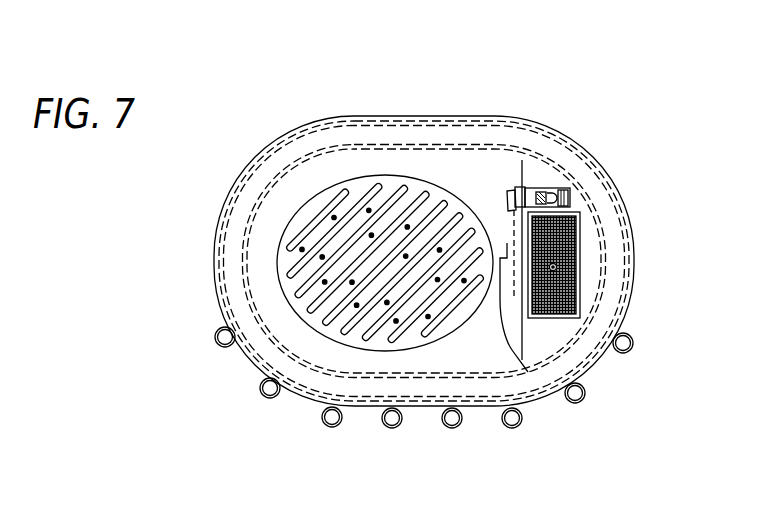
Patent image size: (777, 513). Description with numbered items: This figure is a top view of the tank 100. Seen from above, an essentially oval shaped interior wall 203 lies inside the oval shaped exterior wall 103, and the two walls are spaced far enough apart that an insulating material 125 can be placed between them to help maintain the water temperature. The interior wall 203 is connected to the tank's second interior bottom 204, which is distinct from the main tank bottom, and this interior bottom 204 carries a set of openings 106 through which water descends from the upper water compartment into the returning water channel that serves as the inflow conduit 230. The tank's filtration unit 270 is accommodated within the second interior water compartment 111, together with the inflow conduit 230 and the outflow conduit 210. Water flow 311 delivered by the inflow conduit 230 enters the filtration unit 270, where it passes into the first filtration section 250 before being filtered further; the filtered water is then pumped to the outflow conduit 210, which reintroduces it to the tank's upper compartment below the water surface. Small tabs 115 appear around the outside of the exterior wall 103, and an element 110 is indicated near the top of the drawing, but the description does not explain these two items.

The tank 100 is at (427, 211).
The exterior wall 103 is at (426, 116).
The openings 106 is at (343, 217).
The upper assembly 110 is at (391, 4).
The second interior water compartment 111 is at (590, 265).
The mounting tabs 115 is at (215, 340).
The insulating material 125 is at (395, 138).
The interior wall 203 is at (347, 150).
The second interior bottom 204 is at (290, 250).
The outflow conduit 210 is at (507, 190).
The inflow conduit 230 is at (528, 372).
The first filtration section 250 is at (578, 228).
The filtration unit 270 is at (582, 290).
The water flow 311 is at (577, 278).